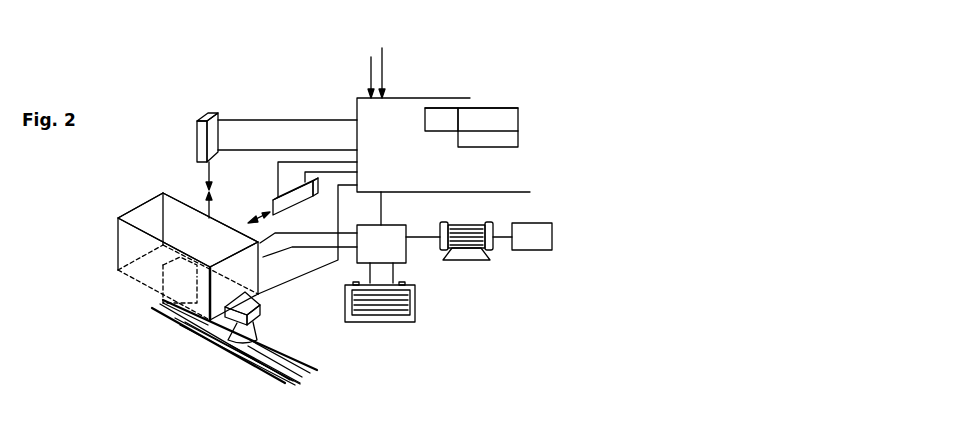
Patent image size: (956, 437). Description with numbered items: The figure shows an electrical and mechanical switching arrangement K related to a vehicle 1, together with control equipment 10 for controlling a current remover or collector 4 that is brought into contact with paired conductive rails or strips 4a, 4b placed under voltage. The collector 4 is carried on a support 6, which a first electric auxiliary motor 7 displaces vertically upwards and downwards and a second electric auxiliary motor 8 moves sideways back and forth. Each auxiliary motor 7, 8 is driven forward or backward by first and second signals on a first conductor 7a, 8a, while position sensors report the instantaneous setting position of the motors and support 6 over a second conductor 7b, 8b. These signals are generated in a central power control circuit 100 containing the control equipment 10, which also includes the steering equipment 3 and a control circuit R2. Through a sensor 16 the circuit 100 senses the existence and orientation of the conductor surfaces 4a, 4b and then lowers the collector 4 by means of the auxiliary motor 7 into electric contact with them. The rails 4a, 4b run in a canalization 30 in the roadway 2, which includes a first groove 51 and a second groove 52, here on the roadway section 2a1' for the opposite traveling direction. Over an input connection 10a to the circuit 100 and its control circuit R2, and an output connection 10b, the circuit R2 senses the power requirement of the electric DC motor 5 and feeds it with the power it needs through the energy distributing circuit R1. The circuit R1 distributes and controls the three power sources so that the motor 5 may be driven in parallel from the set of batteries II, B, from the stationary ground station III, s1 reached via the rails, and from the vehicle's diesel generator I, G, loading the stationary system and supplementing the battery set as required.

The vehicle 1 is at (221, 108).
The first electric auxiliary motor 7 is at (197, 134).
The first conductor 7a is at (297, 148).
The second conductor 7b is at (330, 120).
The connection 10a is at (357, 73).
The power control circuit 100 is at (427, 98).
The steering equipment 3 is at (448, 125).
The control equipment 10 is at (513, 138).
The control circuit R2 is at (500, 108).
The second electric auxiliary motor 8 is at (272, 202).
The first conductor 8a is at (280, 175).
The second conductor 8b is at (337, 180).
The connection 10b is at (382, 210).
The energy distributing circuit R1 is at (407, 257).
The battery set B is at (417, 303).
The electric motor 5 is at (462, 222).
The electrical/mechanical switching arrangement K is at (188, 250).
The support 6 is at (178, 228).
The current remover or collector 4 is at (153, 302).
The sensor 16 is at (264, 310).
The second rail 4b is at (285, 360).
The stationary station s1 is at (265, 350).
The canalization 30 is at (250, 357).
The first rail 4a is at (217, 337).
The roadway 2 is at (160, 315).
The first groove 51 is at (225, 362).
The second groove 52 is at (243, 373).
The roadway section 2a1' is at (294, 372).
The diesel generator G is at (366, 39).
The first power source I is at (384, 55).
The second power source II is at (380, 337).
The third power source III is at (162, 354).